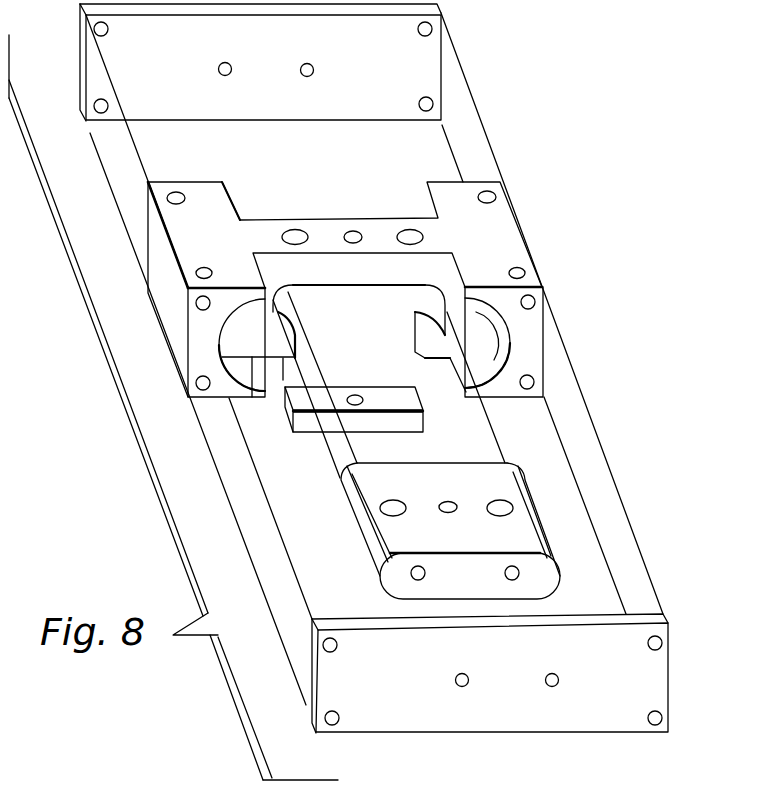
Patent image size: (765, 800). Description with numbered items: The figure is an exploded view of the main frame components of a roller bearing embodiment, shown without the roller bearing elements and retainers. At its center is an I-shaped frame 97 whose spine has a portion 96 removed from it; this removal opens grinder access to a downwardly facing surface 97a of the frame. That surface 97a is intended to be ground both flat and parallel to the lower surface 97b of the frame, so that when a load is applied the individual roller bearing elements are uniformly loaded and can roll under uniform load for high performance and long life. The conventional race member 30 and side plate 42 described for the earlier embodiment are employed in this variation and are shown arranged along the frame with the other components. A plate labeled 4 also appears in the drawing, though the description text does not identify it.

The end plate 4 is at (260, 62).
The I-shaped frame 97 is at (543, 342).
The downwardly facing surface 97a is at (328, 283).
The lower surface 97b is at (247, 398).
The portion 96 is at (425, 422).
The race member 30 is at (545, 530).
The side plate 42 is at (623, 733).